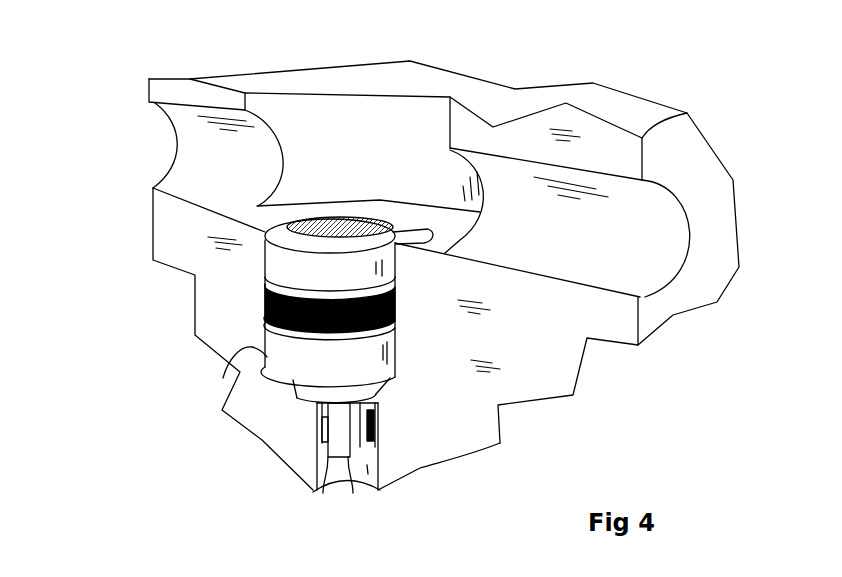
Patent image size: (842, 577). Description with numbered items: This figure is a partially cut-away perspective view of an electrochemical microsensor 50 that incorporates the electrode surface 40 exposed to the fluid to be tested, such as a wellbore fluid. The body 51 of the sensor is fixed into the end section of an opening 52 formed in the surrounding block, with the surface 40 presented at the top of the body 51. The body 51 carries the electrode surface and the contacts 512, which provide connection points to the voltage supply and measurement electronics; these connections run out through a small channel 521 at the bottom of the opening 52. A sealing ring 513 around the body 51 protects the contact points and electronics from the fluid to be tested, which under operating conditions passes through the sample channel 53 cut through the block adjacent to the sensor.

The surface 40 is at (340, 224).
The microsensor 50 is at (251, 352).
The body 51 is at (300, 290).
The opening 52 is at (388, 156).
The sample channel 53 is at (232, 180).
The contacts 512 is at (343, 493).
The sealing ring 513 is at (263, 306).
The small channel 521 is at (320, 490).